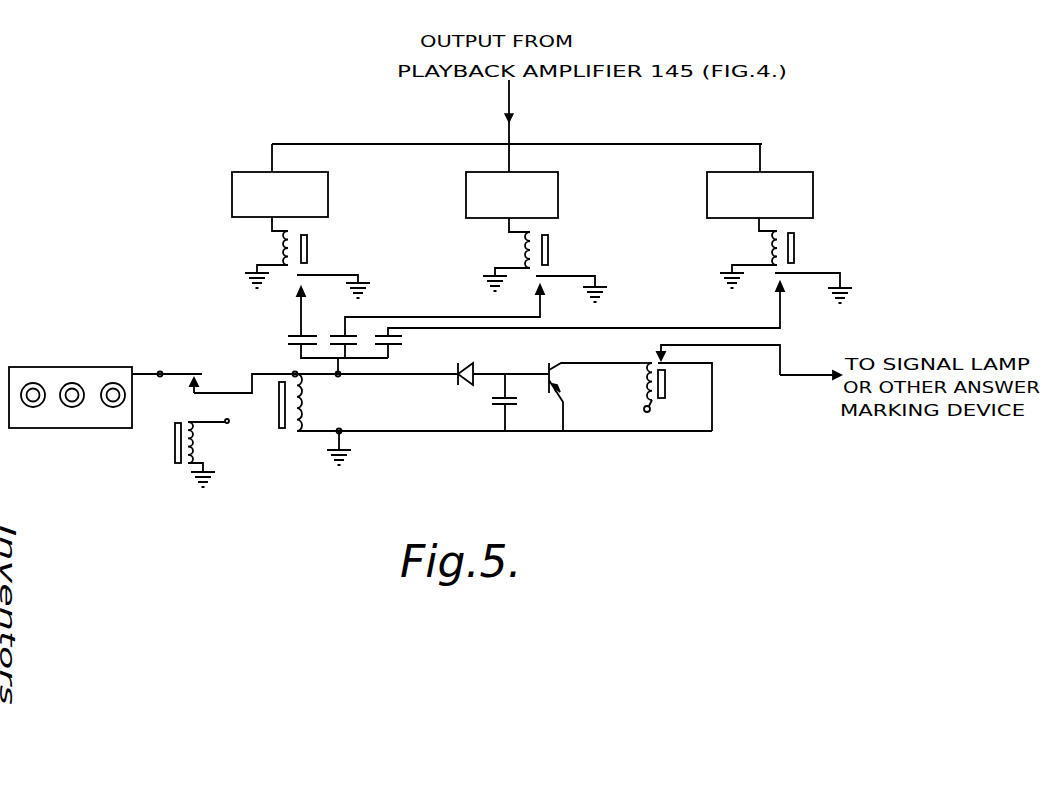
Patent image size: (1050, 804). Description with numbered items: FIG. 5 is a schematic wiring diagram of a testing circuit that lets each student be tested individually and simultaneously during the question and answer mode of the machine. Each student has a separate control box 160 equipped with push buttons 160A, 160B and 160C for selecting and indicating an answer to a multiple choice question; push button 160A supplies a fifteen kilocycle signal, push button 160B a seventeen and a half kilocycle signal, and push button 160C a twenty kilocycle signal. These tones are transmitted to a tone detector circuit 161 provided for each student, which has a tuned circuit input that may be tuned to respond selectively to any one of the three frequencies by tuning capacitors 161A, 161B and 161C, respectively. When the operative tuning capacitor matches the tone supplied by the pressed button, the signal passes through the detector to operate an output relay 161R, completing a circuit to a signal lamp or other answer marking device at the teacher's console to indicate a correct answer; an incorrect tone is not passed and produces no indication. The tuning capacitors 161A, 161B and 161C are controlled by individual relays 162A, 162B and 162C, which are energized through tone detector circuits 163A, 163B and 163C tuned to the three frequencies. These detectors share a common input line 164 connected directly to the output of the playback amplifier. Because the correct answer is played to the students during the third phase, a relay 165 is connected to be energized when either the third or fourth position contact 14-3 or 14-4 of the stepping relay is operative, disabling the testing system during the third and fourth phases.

The common input line 164 is at (510, 100).
The tone detector circuit 163A is at (328, 195).
The tone detector circuit 163B is at (558, 198).
The tone detector circuit 163C is at (813, 203).
The relay 162A is at (283, 248).
The relay 162B is at (525, 247).
The relay 162C is at (772, 243).
The tuning capacitor 161A is at (298, 332).
The tuning capacitor 161B is at (344, 333).
The tuning capacitor 161C is at (387, 333).
The control box 160 is at (89, 390).
The push button 160A is at (33, 383).
The push button 160B is at (72, 383).
The push button 160C is at (113, 383).
The third position contact 14-3 is at (213, 394).
The fourth position contact 14-4 is at (225, 425).
The relay 165 is at (200, 438).
The tone detector circuit 161 is at (514, 440).
The output relay 161R is at (641, 382).